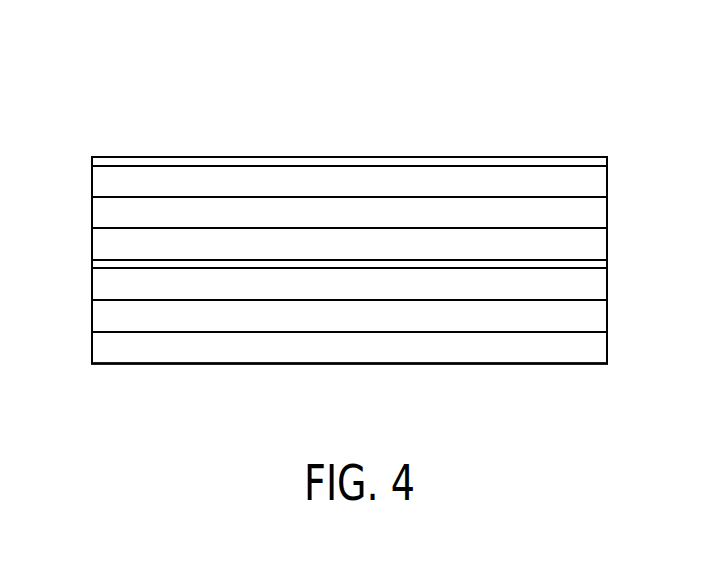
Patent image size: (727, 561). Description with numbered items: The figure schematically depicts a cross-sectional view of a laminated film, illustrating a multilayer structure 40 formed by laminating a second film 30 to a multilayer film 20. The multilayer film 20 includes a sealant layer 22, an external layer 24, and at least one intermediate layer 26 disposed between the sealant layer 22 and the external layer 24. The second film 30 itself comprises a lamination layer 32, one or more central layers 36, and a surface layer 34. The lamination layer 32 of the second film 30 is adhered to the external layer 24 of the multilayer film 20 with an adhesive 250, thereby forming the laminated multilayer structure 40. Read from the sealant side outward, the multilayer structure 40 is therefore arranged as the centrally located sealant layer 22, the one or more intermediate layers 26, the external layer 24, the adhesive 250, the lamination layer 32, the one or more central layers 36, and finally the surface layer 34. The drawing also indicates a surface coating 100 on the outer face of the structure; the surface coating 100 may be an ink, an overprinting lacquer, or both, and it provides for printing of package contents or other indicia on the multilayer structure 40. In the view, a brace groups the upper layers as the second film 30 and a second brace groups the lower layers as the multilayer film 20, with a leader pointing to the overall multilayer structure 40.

The multilayer structure 40 is at (138, 84).
The surface coating 100 is at (555, 160).
The surface layer 34 is at (598, 181).
The central layers 36 is at (598, 211).
The lamination layer 32 is at (598, 241).
The adhesive 250 is at (598, 265).
The external layer 24 is at (598, 282).
The intermediate layer 26 is at (598, 314).
The sealant layer 22 is at (598, 348).
The second film 30 is at (72, 157).
The multilayer film 20 is at (72, 262).